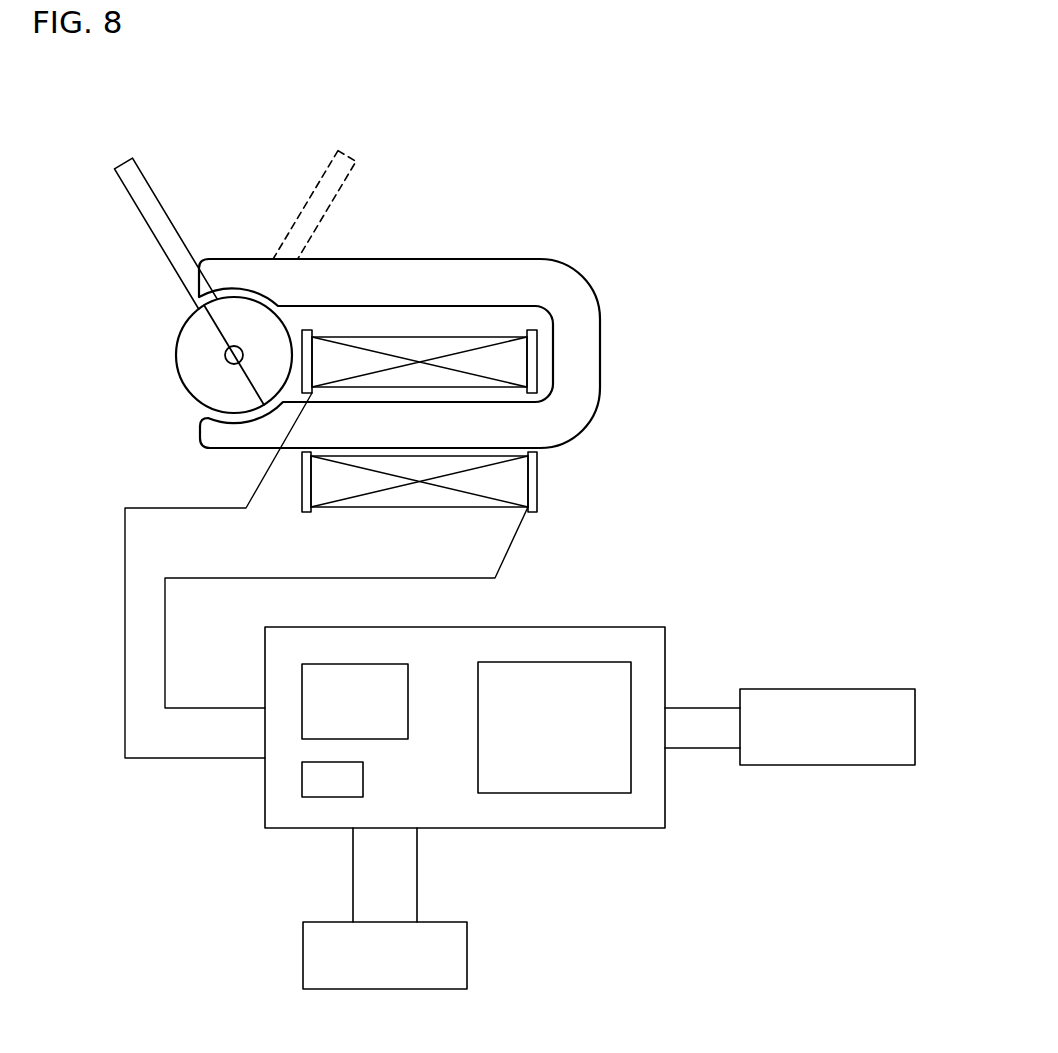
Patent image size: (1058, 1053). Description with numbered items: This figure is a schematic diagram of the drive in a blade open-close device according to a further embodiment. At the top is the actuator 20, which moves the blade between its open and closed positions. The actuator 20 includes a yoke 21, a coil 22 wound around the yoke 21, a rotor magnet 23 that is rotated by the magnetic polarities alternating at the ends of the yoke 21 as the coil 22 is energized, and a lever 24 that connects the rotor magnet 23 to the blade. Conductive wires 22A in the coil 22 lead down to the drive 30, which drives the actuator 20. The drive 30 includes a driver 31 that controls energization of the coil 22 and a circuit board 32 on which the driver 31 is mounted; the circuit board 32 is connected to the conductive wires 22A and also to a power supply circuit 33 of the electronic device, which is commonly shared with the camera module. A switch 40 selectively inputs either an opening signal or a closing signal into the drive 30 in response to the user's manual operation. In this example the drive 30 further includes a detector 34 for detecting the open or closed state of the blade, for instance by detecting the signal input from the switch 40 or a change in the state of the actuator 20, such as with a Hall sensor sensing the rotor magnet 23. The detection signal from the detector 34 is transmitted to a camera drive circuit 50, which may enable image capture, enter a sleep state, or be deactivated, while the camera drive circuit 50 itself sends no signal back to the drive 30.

The actuator 20 is at (628, 142).
The yoke 21 is at (600, 335).
The coil 22 is at (448, 337).
The conductive wires 22A is at (207, 577).
The rotor magnet 23 is at (177, 343).
The lever 24 is at (142, 165).
The drive 30 is at (245, 842).
The driver 31 is at (353, 664).
The circuit board 32 is at (667, 638).
The power supply circuit 33 is at (813, 689).
The detector 34 is at (308, 797).
The switch 40 is at (587, 662).
The camera drive circuit 50 is at (468, 953).